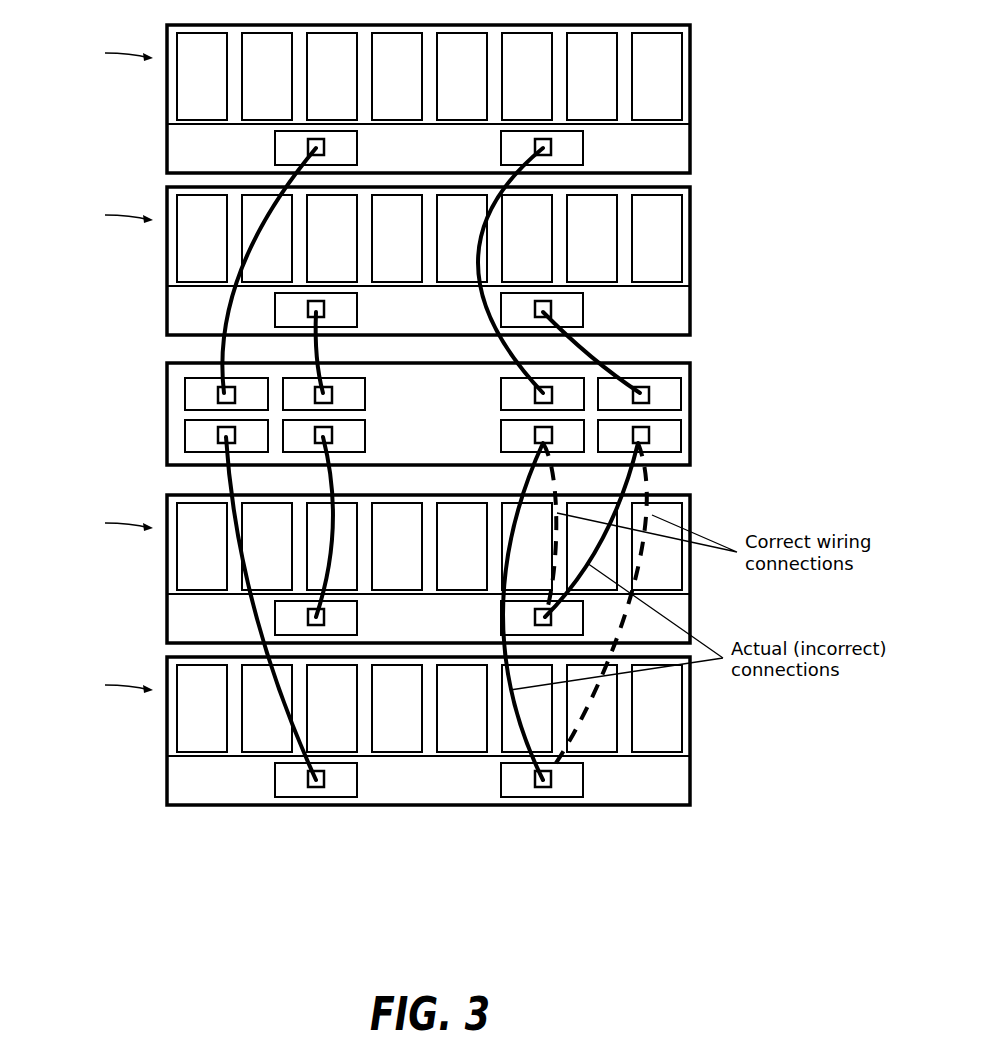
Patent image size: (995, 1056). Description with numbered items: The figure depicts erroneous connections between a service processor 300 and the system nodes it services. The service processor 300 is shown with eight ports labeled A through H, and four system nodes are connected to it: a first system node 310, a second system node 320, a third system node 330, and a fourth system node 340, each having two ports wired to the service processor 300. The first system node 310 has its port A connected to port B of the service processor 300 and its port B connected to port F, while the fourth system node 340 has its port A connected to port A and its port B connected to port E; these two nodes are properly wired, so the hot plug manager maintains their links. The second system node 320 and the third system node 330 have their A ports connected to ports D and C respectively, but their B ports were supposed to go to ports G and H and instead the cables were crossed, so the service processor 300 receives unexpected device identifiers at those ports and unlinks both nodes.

The service processor 300 is at (413, 447).
The system node 1 310 is at (413, 320).
The system node 2 320 is at (413, 628).
The system node 3 330 is at (413, 790).
The system node 4 340 is at (413, 158).